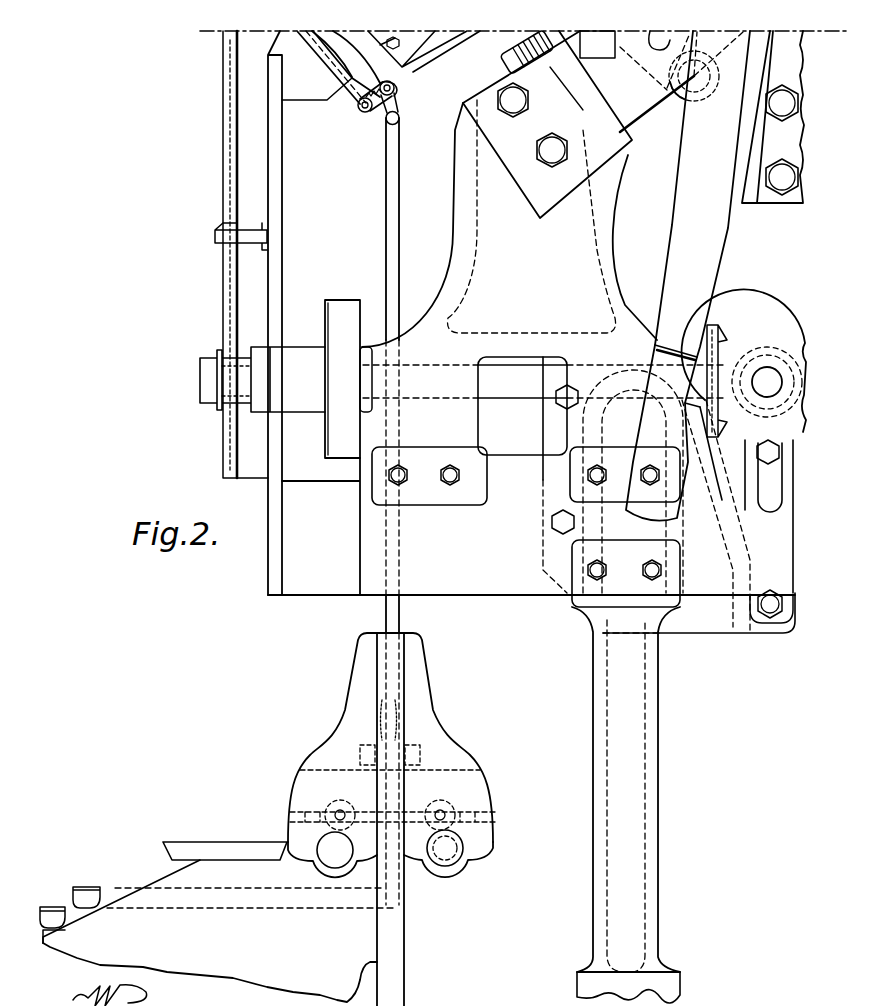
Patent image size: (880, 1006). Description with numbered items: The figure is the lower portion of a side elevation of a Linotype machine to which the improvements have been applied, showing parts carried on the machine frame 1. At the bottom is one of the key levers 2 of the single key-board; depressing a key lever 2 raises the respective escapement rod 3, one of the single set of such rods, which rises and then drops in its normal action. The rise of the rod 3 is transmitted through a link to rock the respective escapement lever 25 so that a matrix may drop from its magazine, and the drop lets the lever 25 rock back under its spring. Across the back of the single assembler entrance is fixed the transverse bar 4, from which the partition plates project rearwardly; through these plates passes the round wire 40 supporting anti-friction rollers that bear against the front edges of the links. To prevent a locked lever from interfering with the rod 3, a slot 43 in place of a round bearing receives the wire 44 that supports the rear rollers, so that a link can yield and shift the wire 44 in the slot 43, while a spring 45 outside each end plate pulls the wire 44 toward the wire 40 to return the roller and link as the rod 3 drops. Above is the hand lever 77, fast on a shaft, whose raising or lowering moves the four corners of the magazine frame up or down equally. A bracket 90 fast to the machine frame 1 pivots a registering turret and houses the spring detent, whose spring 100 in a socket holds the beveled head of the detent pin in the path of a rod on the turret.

The machine frame 1 is at (521, 551).
The key lever 2 is at (50, 905).
The escapement rod 3 is at (386, 207).
The transverse bar 4 is at (283, 313).
The escapement lever 25 is at (410, 50).
The round wire 40 is at (358, 110).
The slot 43 is at (396, 87).
The wire 44 is at (392, 92).
The spring 45 is at (376, 111).
The hand lever 77 is at (688, 276).
The bracket 90 is at (547, 124).
The spring 100 is at (503, 57).